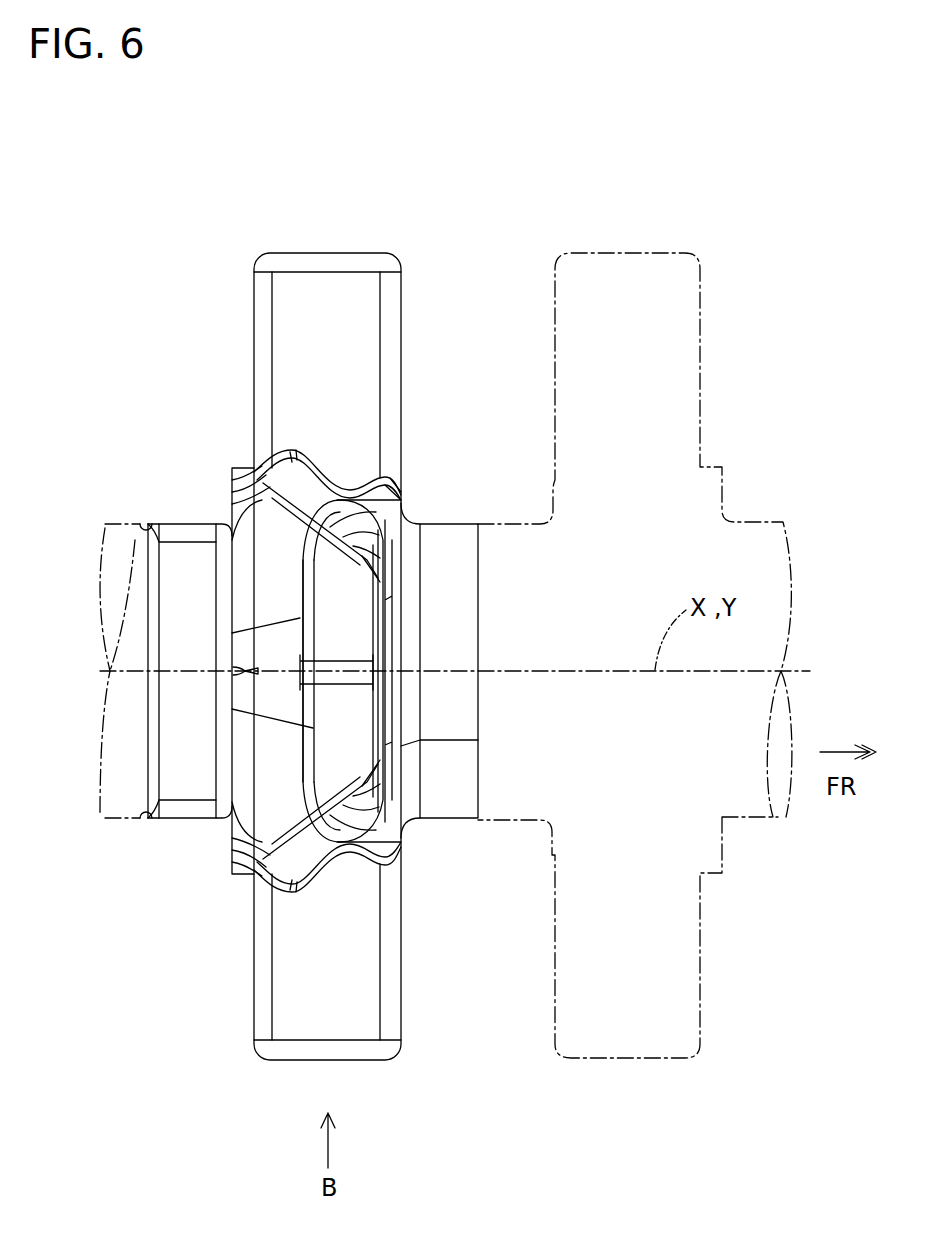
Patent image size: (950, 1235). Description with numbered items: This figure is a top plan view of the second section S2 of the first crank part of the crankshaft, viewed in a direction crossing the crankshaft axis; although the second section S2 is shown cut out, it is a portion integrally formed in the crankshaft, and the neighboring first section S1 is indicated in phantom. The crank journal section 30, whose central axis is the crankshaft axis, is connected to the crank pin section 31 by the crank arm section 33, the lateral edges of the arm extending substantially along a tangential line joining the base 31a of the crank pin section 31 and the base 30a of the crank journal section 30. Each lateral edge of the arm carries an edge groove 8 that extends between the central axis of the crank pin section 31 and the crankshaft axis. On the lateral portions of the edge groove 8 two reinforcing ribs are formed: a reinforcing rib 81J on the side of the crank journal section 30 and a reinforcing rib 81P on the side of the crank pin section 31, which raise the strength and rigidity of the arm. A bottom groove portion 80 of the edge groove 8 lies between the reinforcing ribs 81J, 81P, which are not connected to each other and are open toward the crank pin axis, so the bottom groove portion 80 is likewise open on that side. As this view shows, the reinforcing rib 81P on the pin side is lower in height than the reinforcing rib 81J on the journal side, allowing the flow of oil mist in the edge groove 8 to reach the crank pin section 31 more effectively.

The first section S1 is at (640, 228).
The second section S2 is at (328, 215).
The crank journal section 30 is at (183, 505).
The base of the crank journal section 30a is at (230, 473).
The crank pin section 31 is at (468, 510).
The base of the crank pin section 31a is at (405, 500).
The arm portion 33 is at (358, 1060).
The bottom groove portion 80 is at (391, 491).
The edge groove 8 is at (352, 490).
The reinforcing rib 81J is at (296, 465).
The reinforcing rib 81P is at (386, 488).